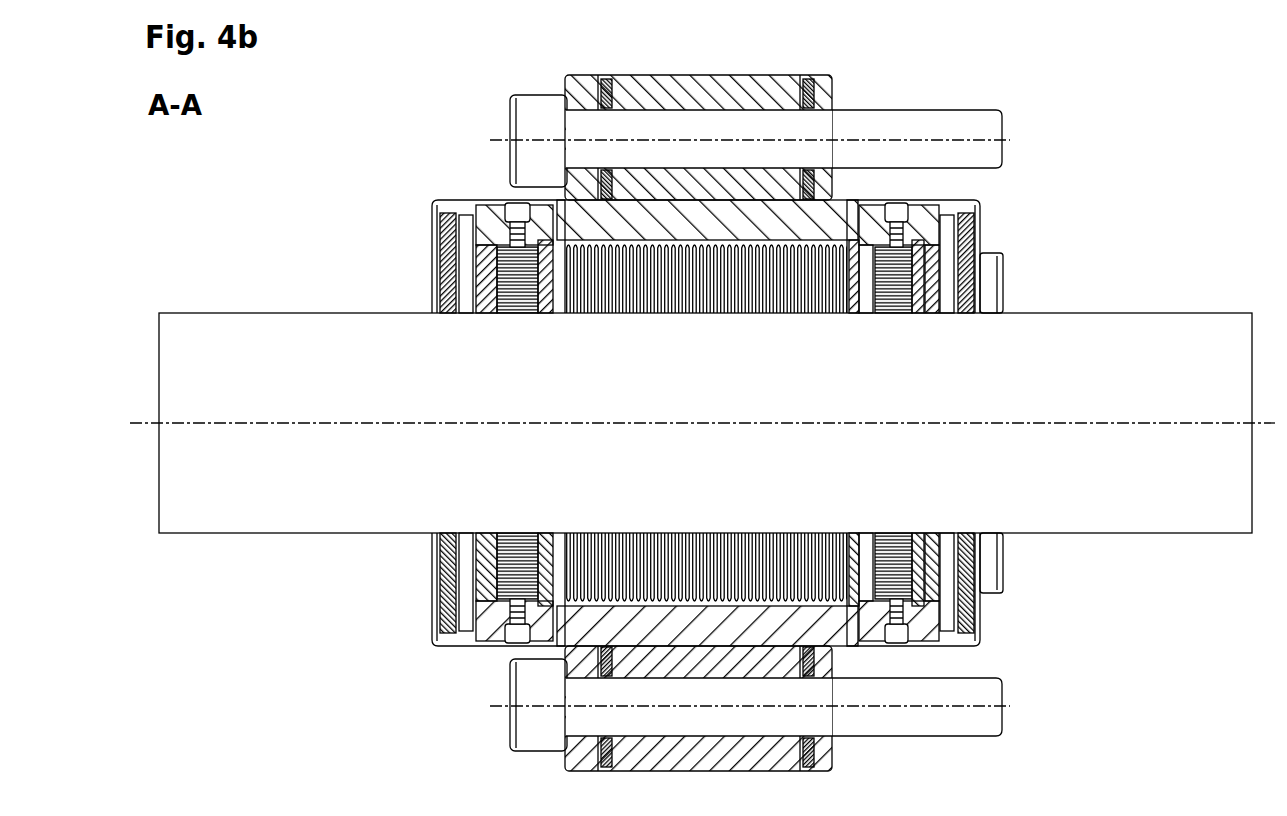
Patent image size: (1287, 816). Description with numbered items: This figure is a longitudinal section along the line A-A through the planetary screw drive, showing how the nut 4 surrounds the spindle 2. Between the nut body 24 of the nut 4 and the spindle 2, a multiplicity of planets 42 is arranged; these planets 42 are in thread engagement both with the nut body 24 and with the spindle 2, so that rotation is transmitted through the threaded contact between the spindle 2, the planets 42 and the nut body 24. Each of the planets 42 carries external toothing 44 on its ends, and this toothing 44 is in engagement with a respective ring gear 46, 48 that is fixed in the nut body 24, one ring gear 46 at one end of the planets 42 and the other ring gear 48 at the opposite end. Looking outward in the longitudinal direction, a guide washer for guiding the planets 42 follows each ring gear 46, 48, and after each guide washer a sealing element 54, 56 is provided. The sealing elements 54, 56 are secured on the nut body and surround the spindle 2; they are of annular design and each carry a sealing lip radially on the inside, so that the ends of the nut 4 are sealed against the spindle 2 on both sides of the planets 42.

The spindle 2 is at (1206, 325).
The nut 4 is at (648, 92).
The nut body 24 is at (733, 187).
The planets 42 is at (563, 653).
The external toothing 44 is at (1003, 273).
The ring gear 46 is at (487, 633).
The ring gear 48 is at (905, 628).
The sealing element 54 is at (1003, 565).
The sealing element 56 is at (432, 592).